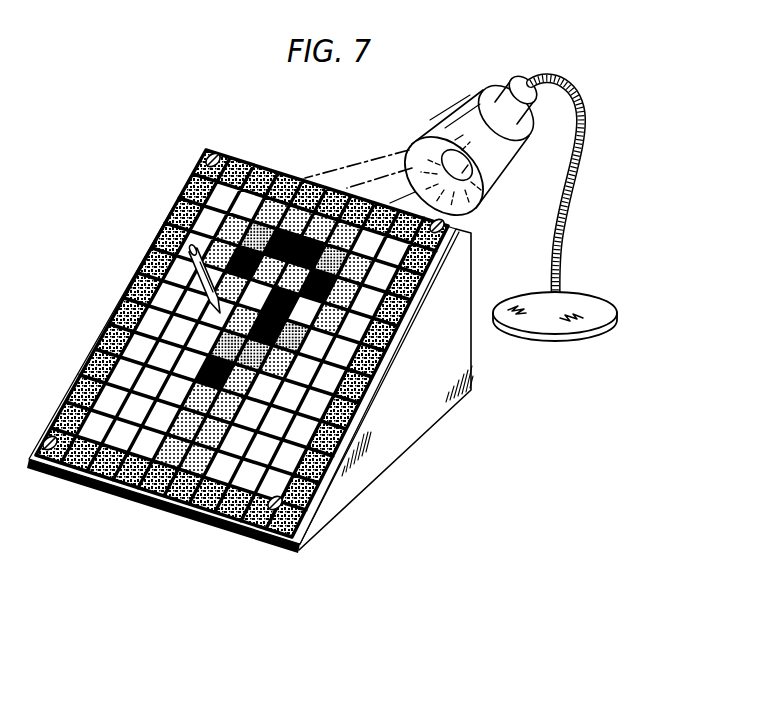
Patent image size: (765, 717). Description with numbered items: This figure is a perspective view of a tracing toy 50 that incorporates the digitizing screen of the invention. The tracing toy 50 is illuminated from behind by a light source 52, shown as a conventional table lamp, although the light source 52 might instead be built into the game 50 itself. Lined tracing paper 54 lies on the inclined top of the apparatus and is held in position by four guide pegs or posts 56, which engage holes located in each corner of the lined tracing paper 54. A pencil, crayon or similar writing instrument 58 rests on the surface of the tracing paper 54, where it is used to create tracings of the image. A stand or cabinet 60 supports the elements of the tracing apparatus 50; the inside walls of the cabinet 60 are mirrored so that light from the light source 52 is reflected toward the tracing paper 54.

The tracing toy 50 is at (322, 311).
The light source 52 is at (461, 185).
The lined tracing paper 54 is at (241, 351).
The guide posts 56 is at (269, 353).
The writing instrument 58 is at (164, 251).
The cabinet 60 is at (397, 389).